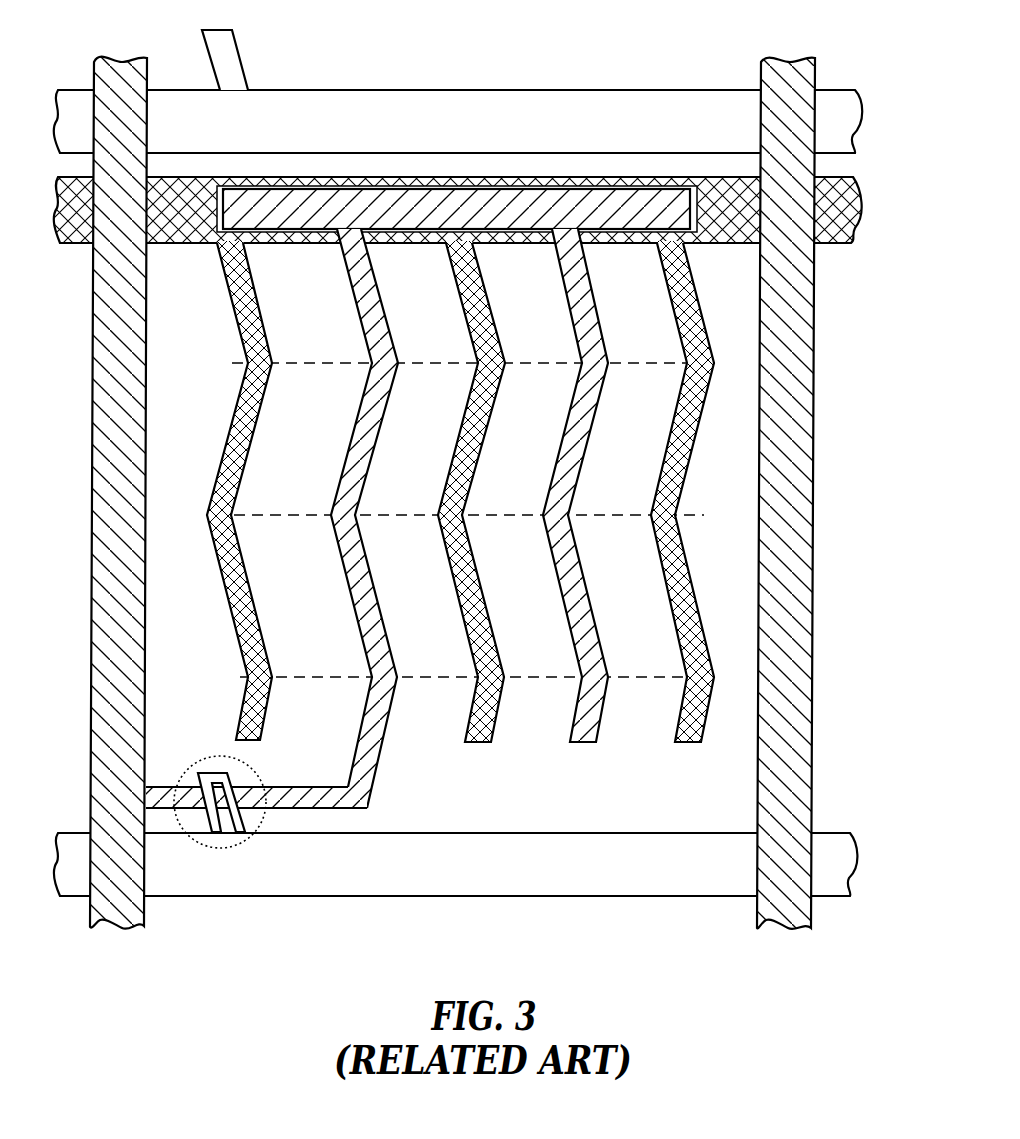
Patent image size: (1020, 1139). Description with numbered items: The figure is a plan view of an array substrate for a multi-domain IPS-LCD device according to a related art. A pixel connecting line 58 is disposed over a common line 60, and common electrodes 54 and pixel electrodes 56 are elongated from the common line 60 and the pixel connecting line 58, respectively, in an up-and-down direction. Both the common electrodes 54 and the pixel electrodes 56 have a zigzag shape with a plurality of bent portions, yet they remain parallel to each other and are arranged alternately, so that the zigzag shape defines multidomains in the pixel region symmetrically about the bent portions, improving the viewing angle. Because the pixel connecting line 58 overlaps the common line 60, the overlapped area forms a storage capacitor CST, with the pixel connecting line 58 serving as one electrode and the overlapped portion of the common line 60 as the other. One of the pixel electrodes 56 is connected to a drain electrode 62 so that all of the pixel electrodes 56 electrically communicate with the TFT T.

The common electrode 54 is at (238, 465).
The pixel electrode 56 is at (364, 468).
The pixel connecting line 58 is at (508, 207).
The common line 60 is at (858, 208).
The drain electrode 62 is at (324, 808).
The storage capacitor CST is at (609, 184).
The TFT T is at (222, 848).